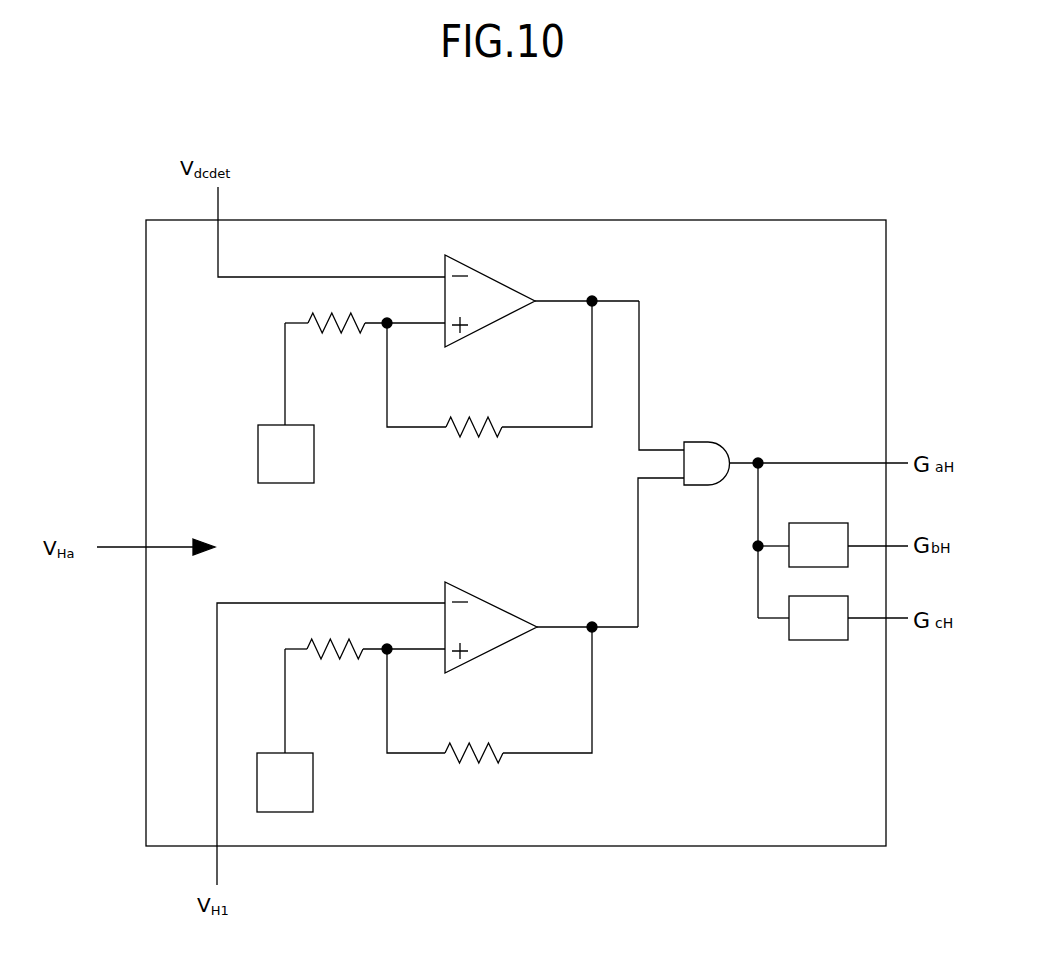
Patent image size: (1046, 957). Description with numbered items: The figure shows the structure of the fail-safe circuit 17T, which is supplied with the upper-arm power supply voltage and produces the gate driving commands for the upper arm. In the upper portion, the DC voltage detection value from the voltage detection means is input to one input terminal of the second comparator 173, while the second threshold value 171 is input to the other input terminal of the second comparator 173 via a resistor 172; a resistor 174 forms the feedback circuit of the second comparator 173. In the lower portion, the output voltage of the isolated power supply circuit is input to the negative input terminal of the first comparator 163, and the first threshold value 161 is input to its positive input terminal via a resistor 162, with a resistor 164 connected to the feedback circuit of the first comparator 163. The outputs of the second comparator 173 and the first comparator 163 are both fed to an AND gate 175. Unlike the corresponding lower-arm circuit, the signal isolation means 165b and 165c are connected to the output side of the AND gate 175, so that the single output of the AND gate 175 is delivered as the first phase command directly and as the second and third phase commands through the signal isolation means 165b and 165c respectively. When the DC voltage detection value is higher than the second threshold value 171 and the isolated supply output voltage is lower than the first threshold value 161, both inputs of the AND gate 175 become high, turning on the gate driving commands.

The fail-safe circuit 17T is at (752, 220).
The second threshold value 171 is at (283, 475).
The resistor 172 is at (336, 340).
The second comparator 173 is at (487, 288).
The resistor 174 is at (474, 443).
The AND gate 175 is at (707, 452).
The first threshold value 161 is at (297, 782).
The resistor 162 is at (332, 665).
The first comparator 163 is at (490, 623).
The resistor 164 is at (470, 778).
The signal isolation means 165b is at (818, 533).
The signal isolation means 165c is at (812, 640).